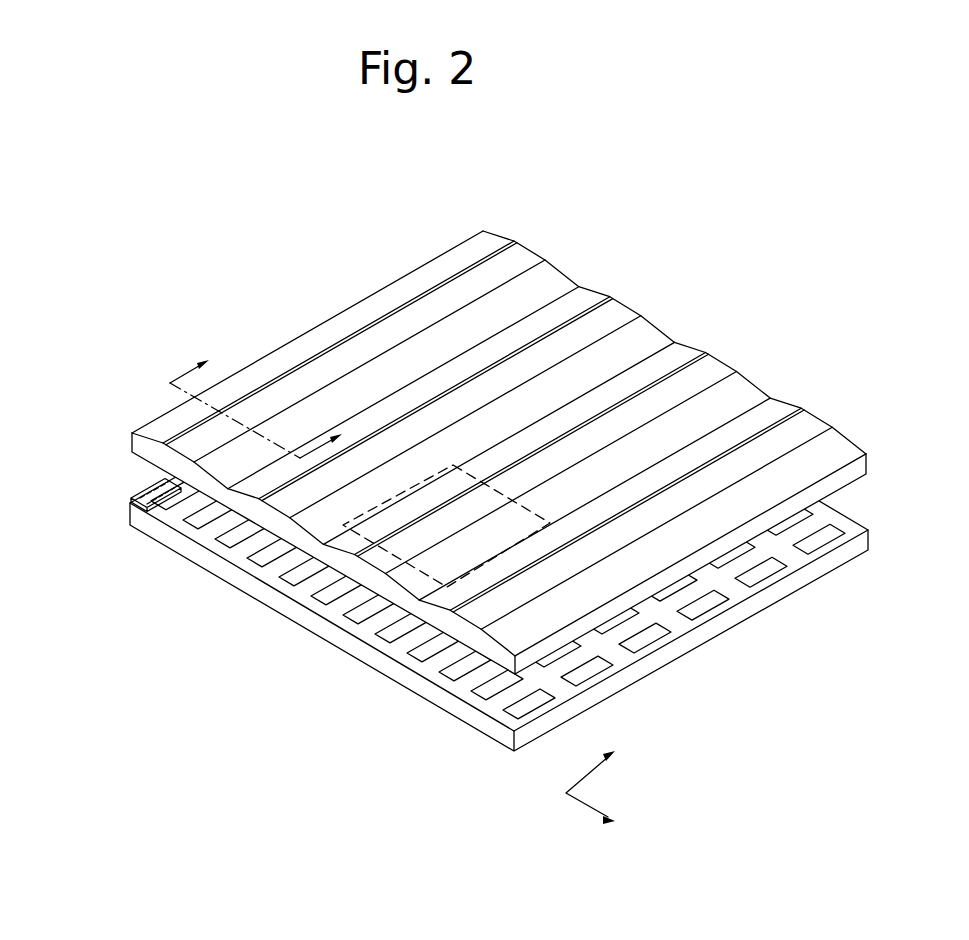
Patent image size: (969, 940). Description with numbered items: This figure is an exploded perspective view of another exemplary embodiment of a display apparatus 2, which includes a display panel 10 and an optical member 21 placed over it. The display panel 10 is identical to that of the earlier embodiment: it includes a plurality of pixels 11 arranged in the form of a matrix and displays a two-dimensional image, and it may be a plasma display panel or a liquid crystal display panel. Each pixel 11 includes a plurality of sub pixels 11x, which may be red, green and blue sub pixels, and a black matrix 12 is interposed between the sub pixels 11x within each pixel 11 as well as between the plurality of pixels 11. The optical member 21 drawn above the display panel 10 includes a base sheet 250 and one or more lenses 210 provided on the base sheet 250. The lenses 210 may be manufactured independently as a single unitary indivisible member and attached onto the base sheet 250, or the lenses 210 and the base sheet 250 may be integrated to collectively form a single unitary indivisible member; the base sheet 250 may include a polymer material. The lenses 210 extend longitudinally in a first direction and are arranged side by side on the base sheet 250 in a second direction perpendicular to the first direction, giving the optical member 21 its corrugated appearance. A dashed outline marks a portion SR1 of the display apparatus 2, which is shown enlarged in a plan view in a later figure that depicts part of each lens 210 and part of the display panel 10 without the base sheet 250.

The display apparatus 2 is at (704, 329).
The display panel 10 is at (210, 566).
The pixel 11 is at (158, 487).
The sub pixel 11x is at (134, 510).
The black matrix 12 is at (153, 518).
The optical member 21 is at (57, 415).
The lens 210 is at (131, 433).
The base sheet 250 is at (131, 447).
The portion SR1 is at (390, 566).